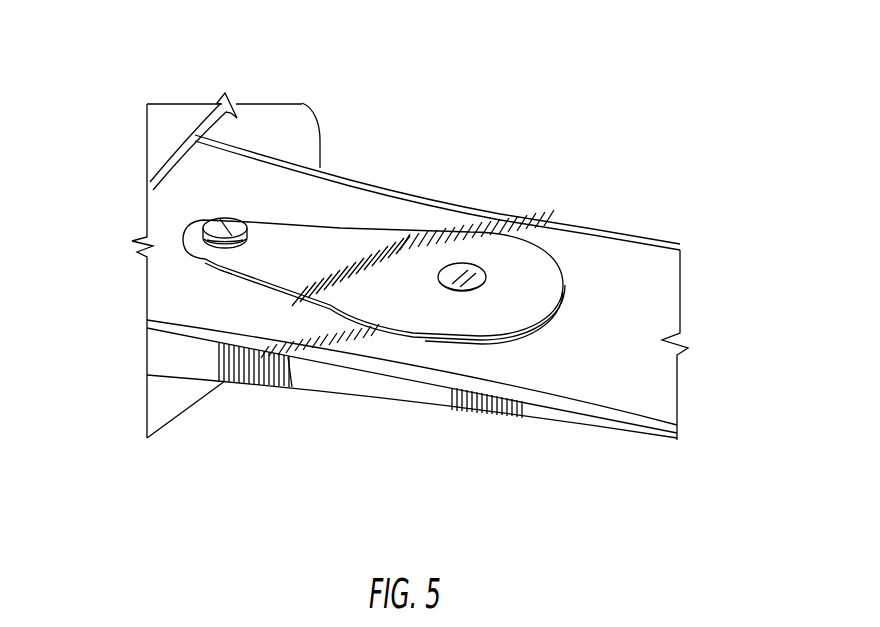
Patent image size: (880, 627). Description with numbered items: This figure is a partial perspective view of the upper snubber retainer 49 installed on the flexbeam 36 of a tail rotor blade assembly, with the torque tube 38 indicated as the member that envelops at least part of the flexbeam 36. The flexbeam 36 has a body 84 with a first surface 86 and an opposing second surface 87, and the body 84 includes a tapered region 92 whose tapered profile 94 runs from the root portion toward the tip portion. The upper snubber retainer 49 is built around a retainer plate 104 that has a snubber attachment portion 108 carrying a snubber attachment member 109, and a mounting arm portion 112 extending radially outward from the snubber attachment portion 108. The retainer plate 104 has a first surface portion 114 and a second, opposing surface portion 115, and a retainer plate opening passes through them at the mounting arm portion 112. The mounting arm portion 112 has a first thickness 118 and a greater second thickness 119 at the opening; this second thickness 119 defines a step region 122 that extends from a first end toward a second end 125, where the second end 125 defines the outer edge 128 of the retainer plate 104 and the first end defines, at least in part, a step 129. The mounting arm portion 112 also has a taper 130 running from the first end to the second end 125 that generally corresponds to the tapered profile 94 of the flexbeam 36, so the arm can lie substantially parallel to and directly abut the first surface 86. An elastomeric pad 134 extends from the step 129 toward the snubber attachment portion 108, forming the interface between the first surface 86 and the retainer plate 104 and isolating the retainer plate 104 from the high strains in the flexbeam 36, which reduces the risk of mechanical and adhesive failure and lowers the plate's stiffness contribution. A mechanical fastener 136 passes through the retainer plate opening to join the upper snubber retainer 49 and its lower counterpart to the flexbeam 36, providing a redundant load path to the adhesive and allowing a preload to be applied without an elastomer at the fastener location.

The flexbeam 36 is at (237, 435).
The torque tube 38 is at (174, 117).
The upper snubber retainer 49 is at (603, 278).
The body 84 is at (180, 372).
The first surface 86 is at (253, 180).
The second surface 87 is at (253, 387).
The tapered region 92 is at (487, 439).
The tapered profile 94 is at (627, 377).
The retainer plate 104 is at (543, 309).
The snubber attachment portion 108 is at (417, 233).
The snubber attachment member 109 is at (466, 270).
The mounting arm portion 112 is at (273, 232).
The first surface portion 114 is at (343, 253).
The second surface portion 115 is at (404, 328).
The first thickness 118 is at (512, 328).
The second thickness 119 is at (188, 263).
The step region 122 is at (229, 291).
The second end 125 is at (133, 243).
The outer edge 128 is at (186, 233).
The step 129 is at (288, 383).
The taper 130 is at (219, 287).
The elastomeric pad 134 is at (362, 322).
The mechanical fastener 136 is at (212, 222).